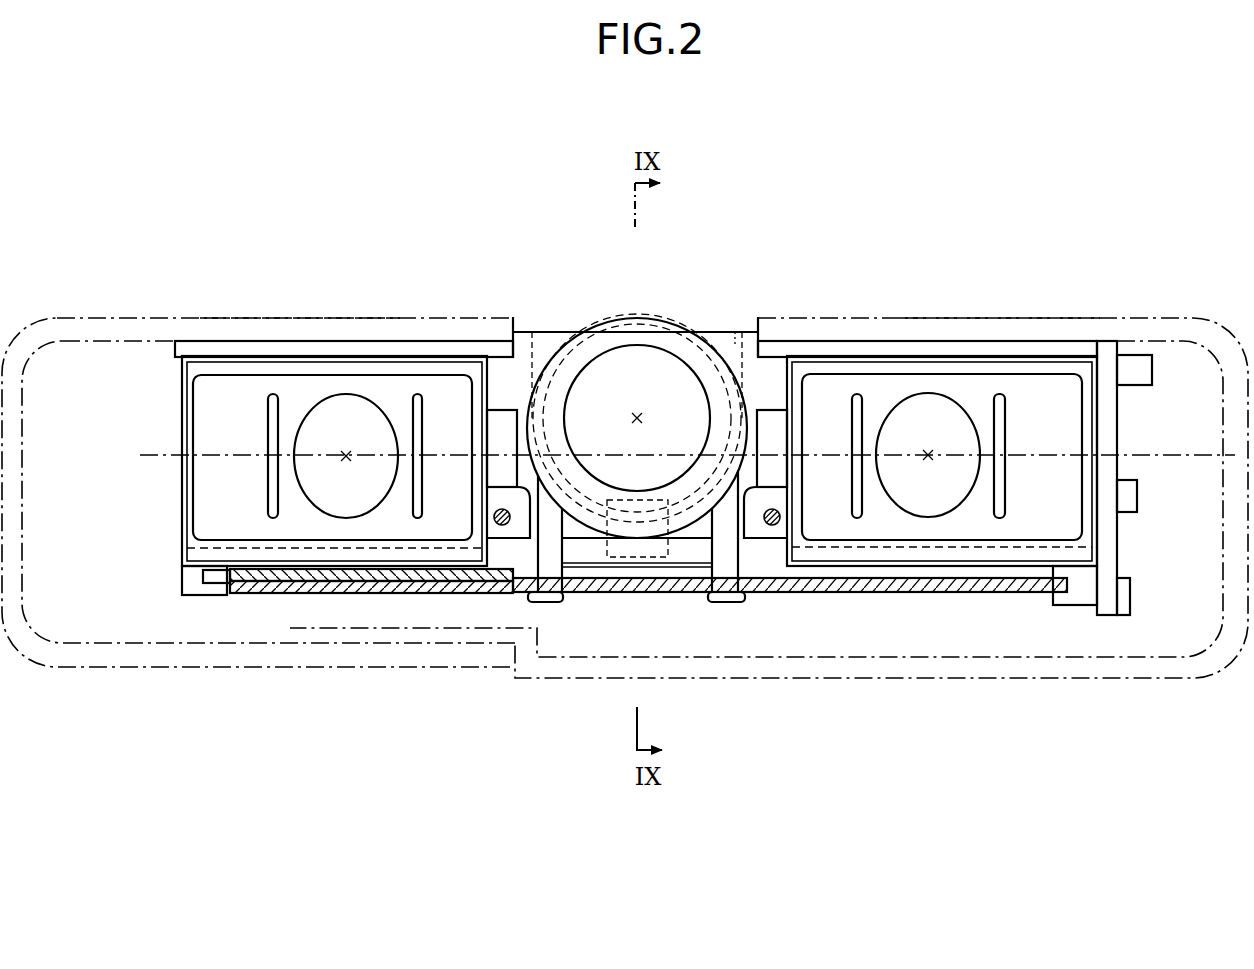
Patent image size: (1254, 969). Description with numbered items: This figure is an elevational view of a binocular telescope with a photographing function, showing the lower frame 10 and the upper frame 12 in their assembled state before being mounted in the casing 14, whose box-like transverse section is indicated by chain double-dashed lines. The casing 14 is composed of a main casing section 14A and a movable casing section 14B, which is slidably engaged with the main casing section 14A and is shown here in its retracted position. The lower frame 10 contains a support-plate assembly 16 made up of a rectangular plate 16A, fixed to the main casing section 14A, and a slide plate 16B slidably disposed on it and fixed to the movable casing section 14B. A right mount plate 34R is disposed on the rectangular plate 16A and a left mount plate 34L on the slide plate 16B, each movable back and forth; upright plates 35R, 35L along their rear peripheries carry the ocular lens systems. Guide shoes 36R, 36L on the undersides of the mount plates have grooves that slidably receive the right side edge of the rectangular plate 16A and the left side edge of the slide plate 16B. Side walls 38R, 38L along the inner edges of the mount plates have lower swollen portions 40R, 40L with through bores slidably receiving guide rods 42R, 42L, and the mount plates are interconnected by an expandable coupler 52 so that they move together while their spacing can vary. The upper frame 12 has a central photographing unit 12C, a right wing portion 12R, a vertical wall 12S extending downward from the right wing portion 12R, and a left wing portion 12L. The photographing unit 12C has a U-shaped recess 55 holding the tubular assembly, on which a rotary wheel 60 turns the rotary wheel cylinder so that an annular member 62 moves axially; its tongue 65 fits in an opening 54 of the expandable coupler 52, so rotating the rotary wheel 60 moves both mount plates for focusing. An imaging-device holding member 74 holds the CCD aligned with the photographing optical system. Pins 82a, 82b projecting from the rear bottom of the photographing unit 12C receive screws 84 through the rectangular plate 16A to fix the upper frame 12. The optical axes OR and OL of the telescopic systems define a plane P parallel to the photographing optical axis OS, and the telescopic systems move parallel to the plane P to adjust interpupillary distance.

The lower frame 10 is at (158, 485).
The upper frame 12 is at (688, 428).
The left wing portion 12L is at (389, 336).
The right wing portion 12R is at (894, 336).
The photographing unit 12C is at (709, 327).
The vertical wall 12S is at (1129, 406).
The casing 14 is at (503, 688).
The main casing section 14A is at (1019, 312).
The movable casing section 14B is at (296, 312).
The support-plate assembly 16 is at (635, 612).
The rectangular plate 16A is at (938, 594).
The slide plate 16B is at (238, 594).
The left mount plate 34L is at (182, 557).
The right mount plate 34R is at (1097, 555).
The upright plate 35L is at (182, 370).
The upright plate 35R is at (1092, 462).
The guide shoe 36L is at (182, 578).
The guide shoe 36R is at (1075, 605).
The side wall 38L is at (490, 443).
The side wall 38R is at (783, 443).
The swollen portion 40L is at (497, 500).
The swollen portion 40R is at (777, 500).
The guide rod 42L is at (493, 517).
The guide rod 42R is at (781, 517).
The expandable coupler 52 is at (681, 580).
The opening 54 is at (615, 567).
The recess 55 is at (735, 332).
The rotary wheel 60 is at (638, 313).
The annular member 62 is at (547, 356).
The tongue 65 is at (607, 548).
The imaging-device holding member 74 is at (623, 395).
The pin 82a is at (735, 552).
The pin 82b is at (540, 552).
The screw 84 is at (545, 604).
The optical axis OL is at (348, 460).
The optical axis OR is at (929, 460).
The optical axis OS is at (645, 418).
The plane P is at (1152, 454).